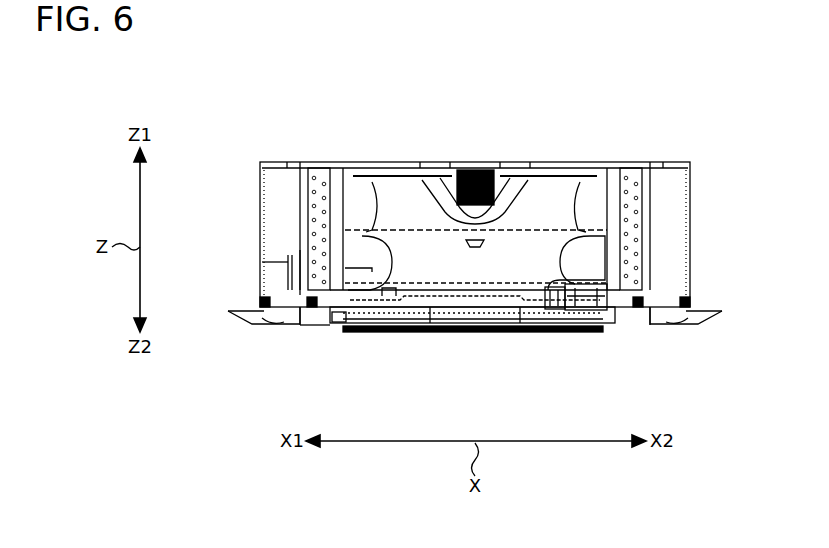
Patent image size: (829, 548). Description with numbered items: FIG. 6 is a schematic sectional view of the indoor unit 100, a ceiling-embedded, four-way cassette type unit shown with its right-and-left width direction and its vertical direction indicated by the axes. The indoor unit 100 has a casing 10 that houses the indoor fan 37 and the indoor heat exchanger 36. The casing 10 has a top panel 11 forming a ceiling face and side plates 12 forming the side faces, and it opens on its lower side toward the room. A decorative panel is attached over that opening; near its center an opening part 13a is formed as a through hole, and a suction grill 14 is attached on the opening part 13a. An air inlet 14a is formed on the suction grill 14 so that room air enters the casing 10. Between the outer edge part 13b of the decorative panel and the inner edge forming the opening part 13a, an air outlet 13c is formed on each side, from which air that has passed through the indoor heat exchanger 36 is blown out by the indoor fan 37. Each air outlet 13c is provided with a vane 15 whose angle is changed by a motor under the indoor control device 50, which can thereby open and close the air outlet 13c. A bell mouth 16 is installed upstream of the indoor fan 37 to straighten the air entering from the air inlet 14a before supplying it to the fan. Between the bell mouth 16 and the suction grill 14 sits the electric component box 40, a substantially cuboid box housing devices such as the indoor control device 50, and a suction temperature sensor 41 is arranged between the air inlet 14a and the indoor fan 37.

The indoor unit 100 is at (682, 134).
The casing 10 is at (683, 167).
The top panel 11 is at (353, 164).
The side plate 12 is at (262, 216).
The opening part 13a is at (345, 326).
The outer edge part 13b is at (238, 317).
The air outlet 13c is at (291, 326).
The suction grill 14 is at (472, 352).
The air inlet 14a is at (476, 333).
The vane 15 is at (272, 324).
The bell mouth 16 is at (410, 268).
The indoor heat exchanger 36 is at (327, 176).
The indoor fan 37 is at (500, 178).
The electric component box 40 is at (615, 288).
The suction temperature sensor 41 is at (553, 310).
The indoor control device 50 is at (605, 326).